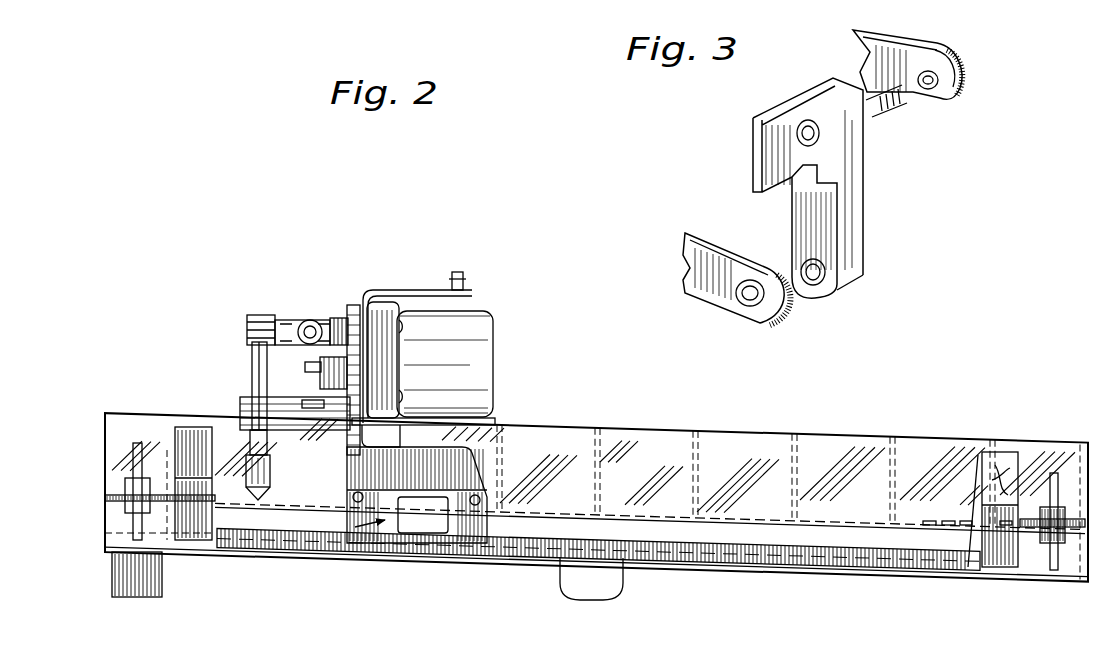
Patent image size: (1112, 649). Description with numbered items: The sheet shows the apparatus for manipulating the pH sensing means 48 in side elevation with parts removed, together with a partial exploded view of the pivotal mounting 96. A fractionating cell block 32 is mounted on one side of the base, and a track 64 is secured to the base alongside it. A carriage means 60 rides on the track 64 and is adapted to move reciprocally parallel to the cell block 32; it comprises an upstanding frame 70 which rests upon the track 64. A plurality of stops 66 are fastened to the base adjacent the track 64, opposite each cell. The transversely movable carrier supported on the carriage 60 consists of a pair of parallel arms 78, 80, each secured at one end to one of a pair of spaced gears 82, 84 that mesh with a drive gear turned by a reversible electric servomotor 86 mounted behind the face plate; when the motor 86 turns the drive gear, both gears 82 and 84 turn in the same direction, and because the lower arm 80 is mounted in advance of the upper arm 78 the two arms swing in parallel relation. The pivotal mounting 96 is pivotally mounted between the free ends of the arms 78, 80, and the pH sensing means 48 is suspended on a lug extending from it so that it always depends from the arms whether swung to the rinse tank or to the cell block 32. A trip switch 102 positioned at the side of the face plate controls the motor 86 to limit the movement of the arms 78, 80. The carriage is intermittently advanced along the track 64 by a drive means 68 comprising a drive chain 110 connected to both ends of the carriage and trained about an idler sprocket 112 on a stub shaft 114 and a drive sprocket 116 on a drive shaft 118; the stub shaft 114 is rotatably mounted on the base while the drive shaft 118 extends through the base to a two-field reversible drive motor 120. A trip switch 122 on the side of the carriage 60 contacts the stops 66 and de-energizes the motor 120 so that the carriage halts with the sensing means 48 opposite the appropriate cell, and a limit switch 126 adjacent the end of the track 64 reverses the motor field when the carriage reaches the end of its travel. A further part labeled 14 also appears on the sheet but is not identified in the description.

In FIG. 2, the rack bar 14 is at (368, 522).
In FIG. 2, the fractionating cell block 32 is at (633, 425).
In FIG. 2, the pH sensing means 48 is at (247, 365).
In FIG. 2, the carriage means 60 is at (394, 289).
In FIG. 2, the track 64 is at (598, 542).
In FIG. 2, the stops 66 is at (591, 590).
In FIG. 2, the drive means 68 is at (118, 518).
In FIG. 2, the upstanding frame 70 is at (470, 450).
In FIG. 2, the upper parallel arm 78 is at (333, 318).
In FIG. 3, the upper parallel arm 78 is at (945, 40).
In FIG. 2, the lower parallel arm 80 is at (320, 380).
In FIG. 3, the lower parallel arm 80 is at (716, 309).
In FIG. 2, the spaced gear 82 is at (349, 310).
In FIG. 2, the spaced gear 84 is at (318, 400).
In FIG. 2, the reversible electric servomotor 86 is at (458, 338).
In FIG. 2, the pivotal mounting 96 is at (318, 320).
In FIG. 3, the pivotal mounting 96 is at (865, 200).
In FIG. 2, the trip switch 102 is at (305, 433).
In FIG. 2, the drive chain 110 is at (927, 521).
In FIG. 2, the idler sprocket 112 is at (1072, 540).
In FIG. 2, the stub shaft 114 is at (1063, 482).
In FIG. 2, the drive sprocket 116 is at (120, 497).
In FIG. 2, the drive shaft 118 is at (160, 412).
In FIG. 2, the drive motor 120 is at (163, 574).
In FIG. 2, the trip switch 122 is at (423, 515).
In FIG. 2, the limit switch 126 is at (197, 412).